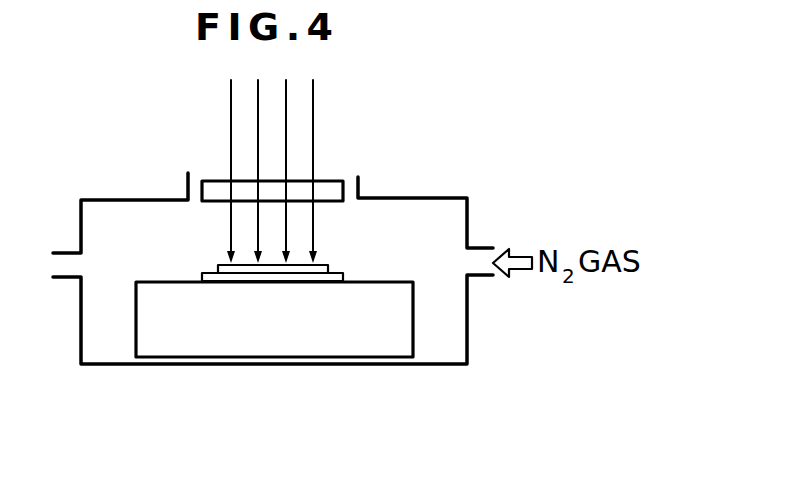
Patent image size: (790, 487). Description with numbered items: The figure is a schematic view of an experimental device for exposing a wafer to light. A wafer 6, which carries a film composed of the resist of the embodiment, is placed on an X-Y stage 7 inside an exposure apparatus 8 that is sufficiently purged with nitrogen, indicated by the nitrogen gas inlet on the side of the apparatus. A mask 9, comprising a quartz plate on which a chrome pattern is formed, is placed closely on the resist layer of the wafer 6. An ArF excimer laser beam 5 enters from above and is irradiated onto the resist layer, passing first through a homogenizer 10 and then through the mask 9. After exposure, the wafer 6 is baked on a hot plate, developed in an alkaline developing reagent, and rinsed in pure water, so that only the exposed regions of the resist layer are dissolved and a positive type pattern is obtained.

The ArF excimer laser beam 5 is at (313, 102).
The wafer 6 is at (338, 274).
The X-Y stage 7 is at (330, 338).
The exposure apparatus 8 is at (140, 200).
The mask 9 is at (322, 265).
The homogenizer 10 is at (325, 185).